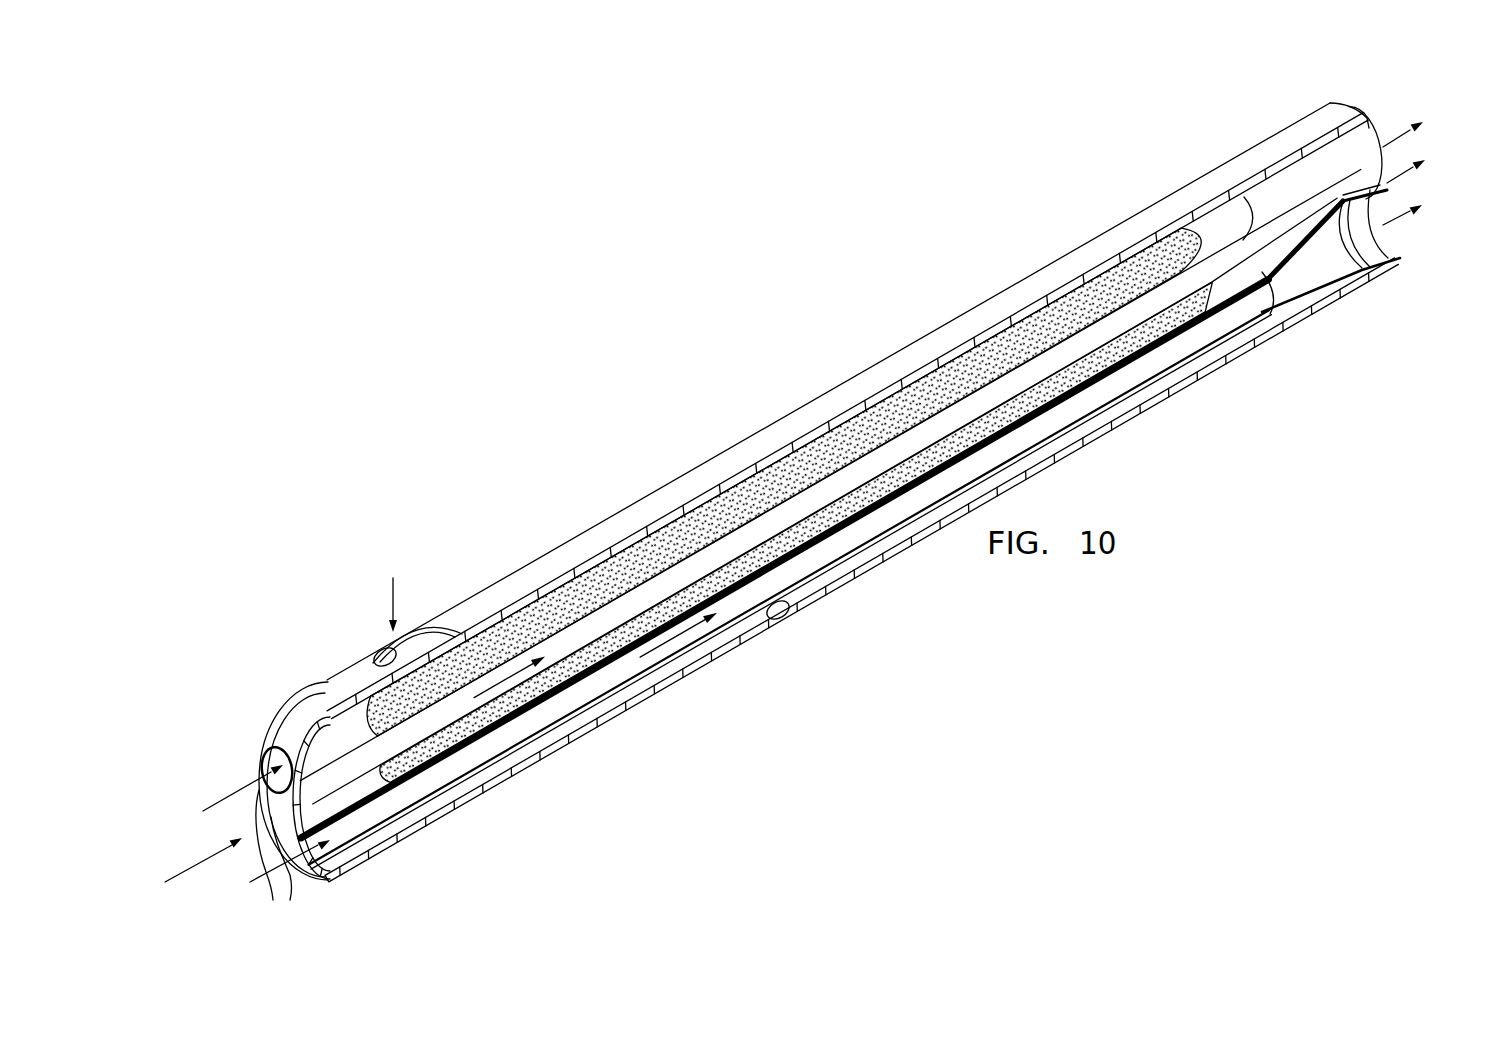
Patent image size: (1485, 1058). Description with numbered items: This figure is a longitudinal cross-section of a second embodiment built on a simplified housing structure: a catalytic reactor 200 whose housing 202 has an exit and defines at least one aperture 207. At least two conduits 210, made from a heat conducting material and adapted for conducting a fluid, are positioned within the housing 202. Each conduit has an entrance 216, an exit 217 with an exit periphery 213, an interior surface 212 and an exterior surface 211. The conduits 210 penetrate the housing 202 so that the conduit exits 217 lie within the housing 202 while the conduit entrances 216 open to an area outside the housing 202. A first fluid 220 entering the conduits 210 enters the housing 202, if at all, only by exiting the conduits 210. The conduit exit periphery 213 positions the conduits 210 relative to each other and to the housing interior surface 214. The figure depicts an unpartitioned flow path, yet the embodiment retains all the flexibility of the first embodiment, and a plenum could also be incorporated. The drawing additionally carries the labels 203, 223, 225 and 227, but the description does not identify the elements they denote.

The catalytic reactor 200 is at (593, 510).
The housing 202 is at (328, 690).
The porous layer 203 is at (548, 607).
The aperture 207 is at (390, 658).
The conduits 210 is at (340, 733).
The exterior surface 211 is at (366, 745).
The interior surface 212 is at (455, 766).
The exit periphery 213 is at (1363, 143).
The housing interior surface 214 is at (780, 617).
The entrance 216 is at (262, 765).
The exit 217 is at (1385, 255).
The first fluid 220 is at (204, 862).
The inner porous layer 223 is at (822, 497).
The tapered transition 225 is at (1362, 275).
The transverse flow 227 is at (395, 602).